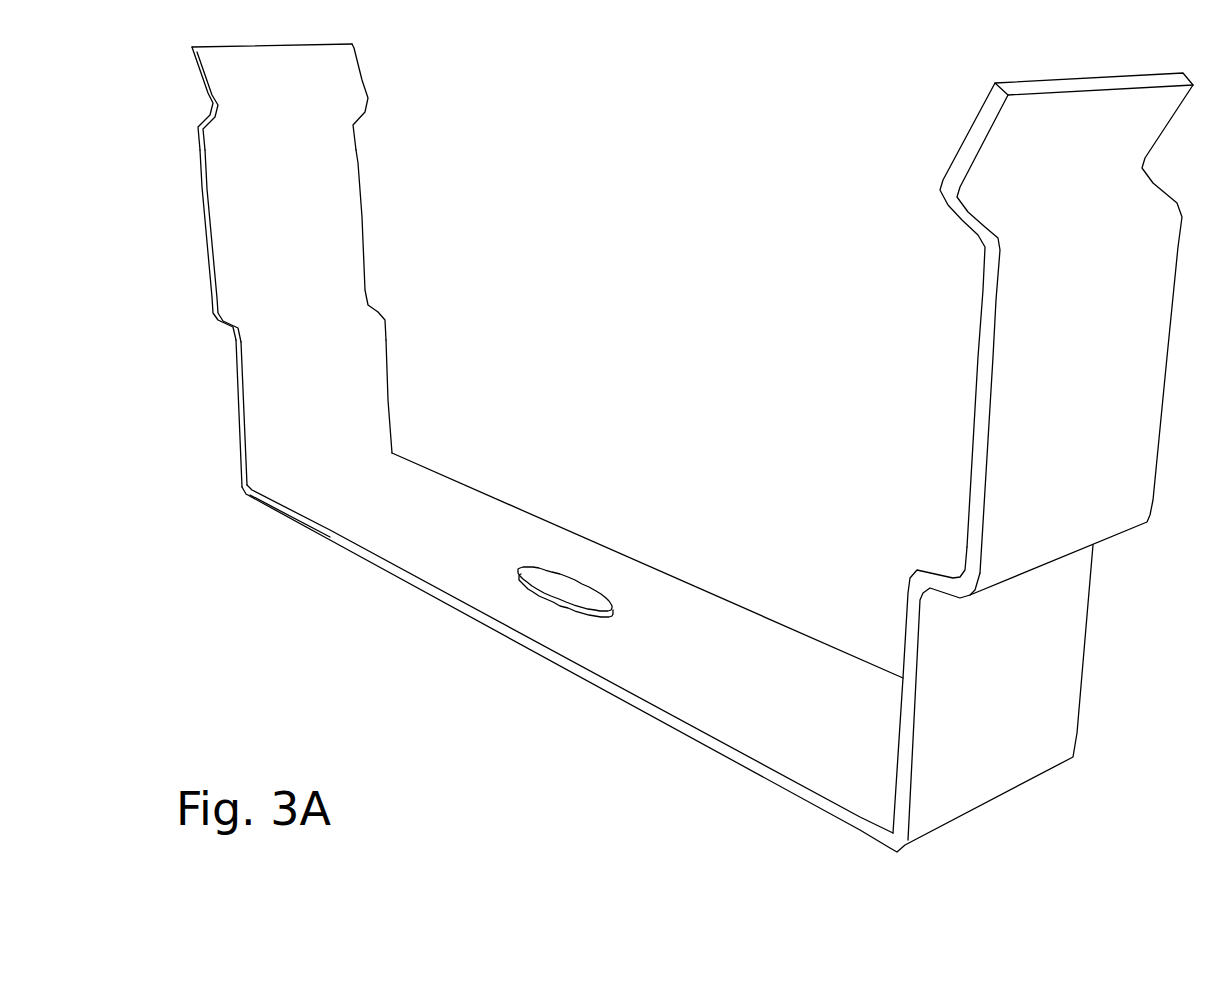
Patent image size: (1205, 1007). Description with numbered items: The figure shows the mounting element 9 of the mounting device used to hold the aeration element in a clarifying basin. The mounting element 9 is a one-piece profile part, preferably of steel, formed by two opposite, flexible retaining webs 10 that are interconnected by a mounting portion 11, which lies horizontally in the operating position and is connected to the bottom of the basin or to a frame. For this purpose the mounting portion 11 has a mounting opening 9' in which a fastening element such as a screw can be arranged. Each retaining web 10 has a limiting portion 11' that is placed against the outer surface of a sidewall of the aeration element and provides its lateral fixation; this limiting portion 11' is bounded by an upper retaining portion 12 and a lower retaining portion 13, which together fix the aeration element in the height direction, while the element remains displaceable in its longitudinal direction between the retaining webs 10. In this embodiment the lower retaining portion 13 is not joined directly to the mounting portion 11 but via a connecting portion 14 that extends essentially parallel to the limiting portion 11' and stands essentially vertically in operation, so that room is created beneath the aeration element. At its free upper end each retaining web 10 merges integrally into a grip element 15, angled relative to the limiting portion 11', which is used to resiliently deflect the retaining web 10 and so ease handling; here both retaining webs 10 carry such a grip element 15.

The mounting element 9 is at (642, 448).
The mounting opening 9' is at (520, 623).
The retaining web 10 is at (996, 456).
The mounting portion 11 is at (667, 652).
The limiting portion 11' is at (323, 246).
The upper retaining portion 12 is at (962, 230).
The lower retaining portion 13 is at (940, 568).
The connecting portion 14 is at (368, 397).
The grip element 15 is at (338, 66).